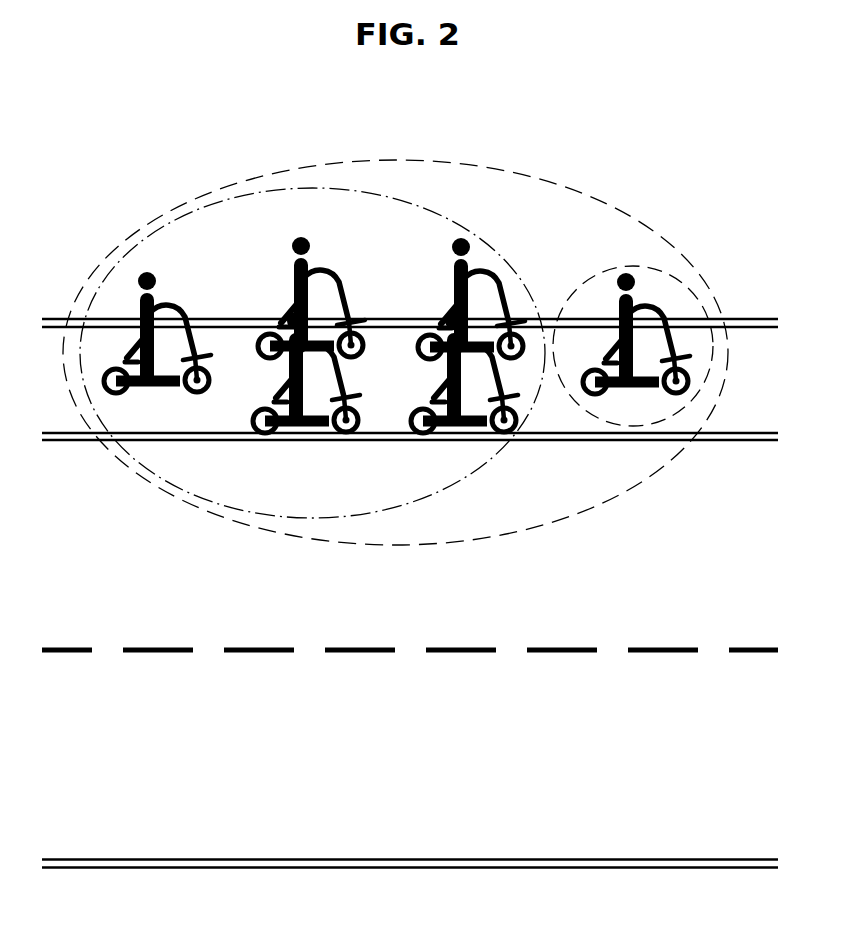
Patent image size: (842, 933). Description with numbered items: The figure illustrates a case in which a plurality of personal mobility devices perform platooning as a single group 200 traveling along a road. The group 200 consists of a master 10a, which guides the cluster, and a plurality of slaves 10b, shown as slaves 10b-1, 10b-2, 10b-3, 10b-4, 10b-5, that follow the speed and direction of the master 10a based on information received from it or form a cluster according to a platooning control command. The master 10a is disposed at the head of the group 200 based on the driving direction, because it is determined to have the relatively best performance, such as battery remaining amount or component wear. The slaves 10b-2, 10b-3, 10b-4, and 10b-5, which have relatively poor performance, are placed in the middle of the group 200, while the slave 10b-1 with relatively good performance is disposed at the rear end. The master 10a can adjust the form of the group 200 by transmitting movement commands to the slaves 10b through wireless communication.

The group 200 is at (415, 163).
The slave 10b is at (316, 190).
The slave 10b-1 is at (158, 274).
The slave 10b-2 is at (305, 426).
The slave 10b-3 is at (472, 428).
The slave 10b-4 is at (309, 238).
The slave 10b-5 is at (466, 240).
The master 10a is at (640, 265).